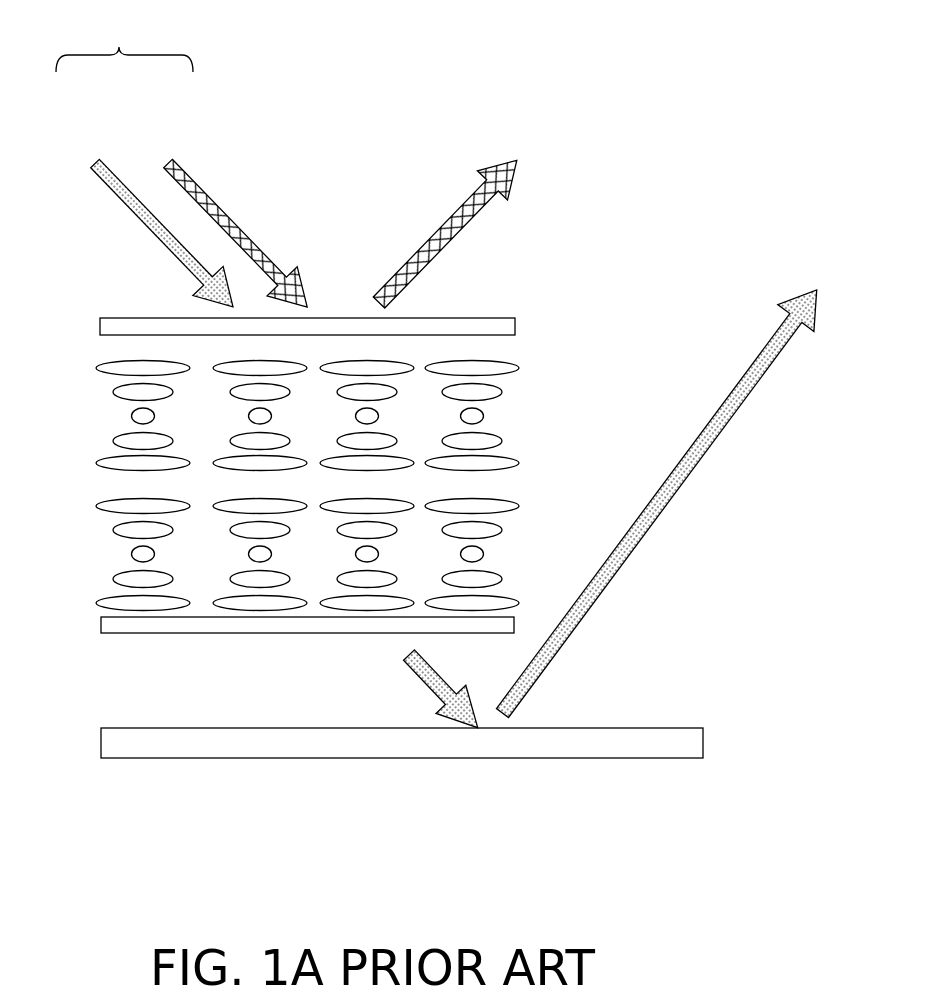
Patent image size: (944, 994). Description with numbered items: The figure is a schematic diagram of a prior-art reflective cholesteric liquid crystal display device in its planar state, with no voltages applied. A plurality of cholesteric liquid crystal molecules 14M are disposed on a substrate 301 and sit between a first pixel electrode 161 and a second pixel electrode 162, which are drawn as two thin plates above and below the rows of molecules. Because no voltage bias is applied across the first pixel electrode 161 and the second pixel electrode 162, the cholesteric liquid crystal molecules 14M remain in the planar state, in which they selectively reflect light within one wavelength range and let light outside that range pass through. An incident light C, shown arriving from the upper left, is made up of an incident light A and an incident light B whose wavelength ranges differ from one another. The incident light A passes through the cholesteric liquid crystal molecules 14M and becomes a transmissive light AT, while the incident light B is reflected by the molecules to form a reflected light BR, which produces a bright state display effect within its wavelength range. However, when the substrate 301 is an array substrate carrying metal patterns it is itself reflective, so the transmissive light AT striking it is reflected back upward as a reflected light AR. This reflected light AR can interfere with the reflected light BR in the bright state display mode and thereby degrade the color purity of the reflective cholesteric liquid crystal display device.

The incident light C is at (119, 45).
The incident light A is at (90, 160).
The incident light B is at (163, 160).
The reflected light BR is at (440, 228).
The second pixel electrode 162 is at (515, 328).
The cholesteric liquid crystal molecules 14M is at (519, 463).
The first pixel electrode 161 is at (514, 625).
The reflected light AR is at (653, 520).
The transmissive light AT is at (422, 683).
The substrate 301 is at (703, 743).